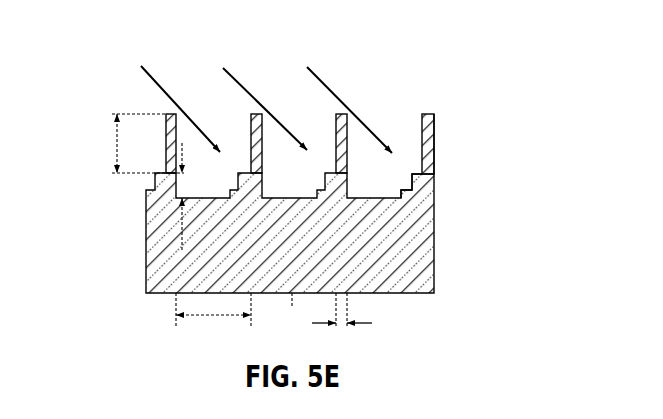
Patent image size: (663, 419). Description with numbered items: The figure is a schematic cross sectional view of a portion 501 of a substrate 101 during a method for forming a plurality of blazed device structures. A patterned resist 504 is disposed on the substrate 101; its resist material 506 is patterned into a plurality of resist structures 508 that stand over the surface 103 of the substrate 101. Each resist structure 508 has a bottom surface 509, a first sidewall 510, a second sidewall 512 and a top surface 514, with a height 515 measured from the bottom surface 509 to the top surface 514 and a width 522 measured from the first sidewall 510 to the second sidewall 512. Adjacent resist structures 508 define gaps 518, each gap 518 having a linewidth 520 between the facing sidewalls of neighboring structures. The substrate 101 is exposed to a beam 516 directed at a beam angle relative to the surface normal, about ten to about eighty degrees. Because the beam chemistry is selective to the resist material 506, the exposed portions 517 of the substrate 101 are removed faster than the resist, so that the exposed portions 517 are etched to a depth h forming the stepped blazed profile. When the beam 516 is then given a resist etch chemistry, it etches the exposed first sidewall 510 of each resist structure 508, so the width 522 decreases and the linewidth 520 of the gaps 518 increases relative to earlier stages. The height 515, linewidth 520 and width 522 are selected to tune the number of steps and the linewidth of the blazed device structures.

The substrate 101 is at (433, 234).
The surface 103 is at (435, 176).
The portion 501 is at (430, 58).
The patterned resist 504 is at (445, 122).
The resist material 506 is at (445, 160).
The resist structures 508 is at (169, 112).
The bottom surface 509 is at (254, 195).
The first sidewall 510 is at (248, 146).
The second sidewall 512 is at (264, 157).
The top surface 514 is at (254, 118).
The height 515 is at (116, 146).
The beam 516 is at (345, 104).
The exposed portions 517 is at (198, 120).
The gaps 518 is at (313, 120).
The linewidth 520 is at (212, 318).
The width 522 is at (362, 326).
The depth h is at (177, 220).